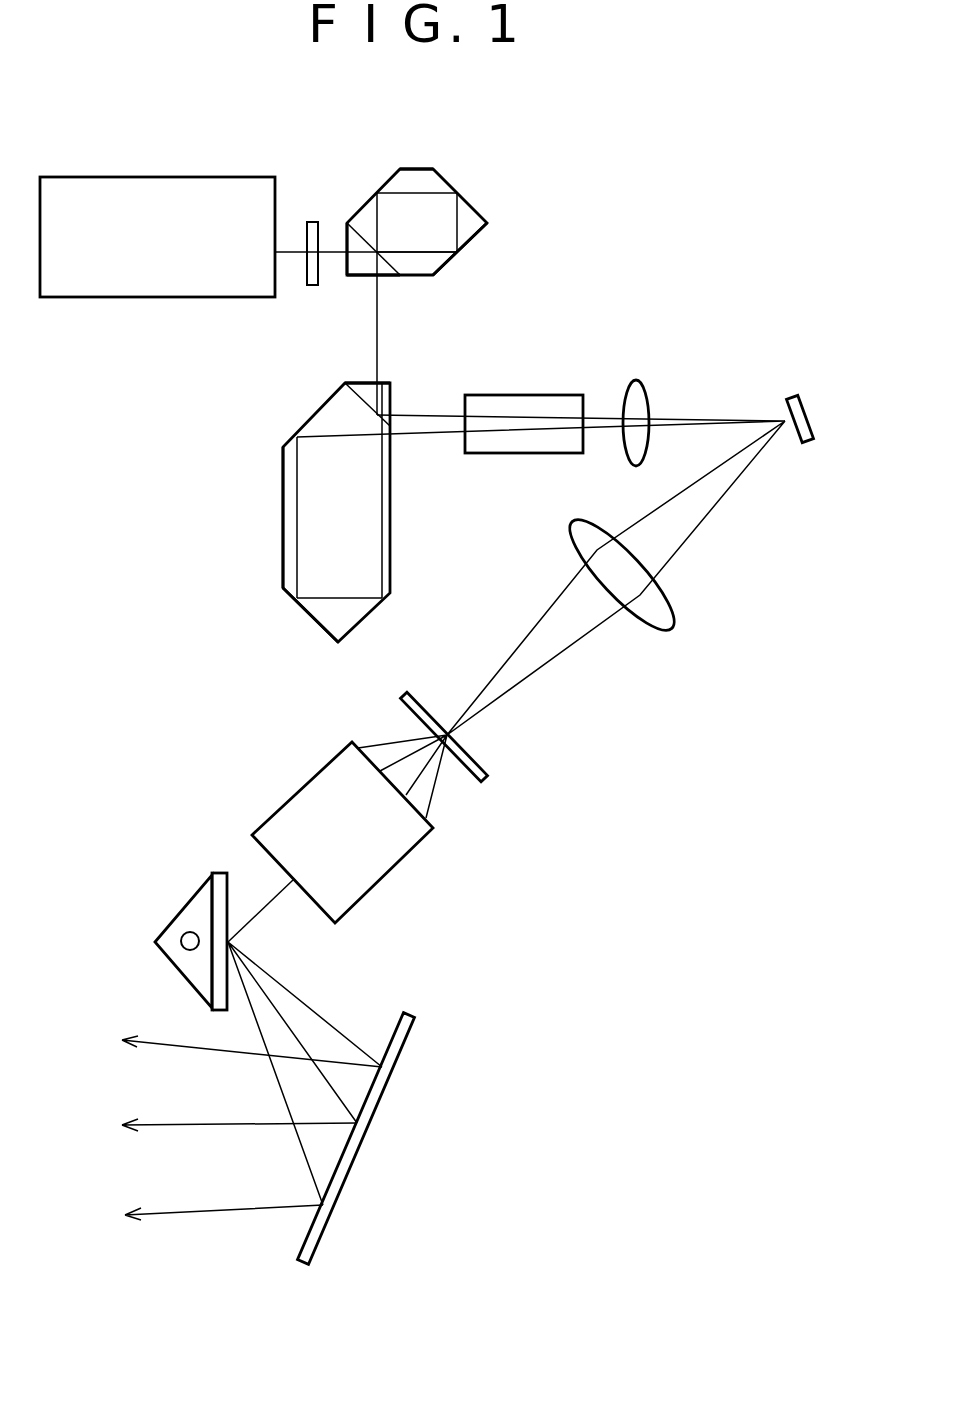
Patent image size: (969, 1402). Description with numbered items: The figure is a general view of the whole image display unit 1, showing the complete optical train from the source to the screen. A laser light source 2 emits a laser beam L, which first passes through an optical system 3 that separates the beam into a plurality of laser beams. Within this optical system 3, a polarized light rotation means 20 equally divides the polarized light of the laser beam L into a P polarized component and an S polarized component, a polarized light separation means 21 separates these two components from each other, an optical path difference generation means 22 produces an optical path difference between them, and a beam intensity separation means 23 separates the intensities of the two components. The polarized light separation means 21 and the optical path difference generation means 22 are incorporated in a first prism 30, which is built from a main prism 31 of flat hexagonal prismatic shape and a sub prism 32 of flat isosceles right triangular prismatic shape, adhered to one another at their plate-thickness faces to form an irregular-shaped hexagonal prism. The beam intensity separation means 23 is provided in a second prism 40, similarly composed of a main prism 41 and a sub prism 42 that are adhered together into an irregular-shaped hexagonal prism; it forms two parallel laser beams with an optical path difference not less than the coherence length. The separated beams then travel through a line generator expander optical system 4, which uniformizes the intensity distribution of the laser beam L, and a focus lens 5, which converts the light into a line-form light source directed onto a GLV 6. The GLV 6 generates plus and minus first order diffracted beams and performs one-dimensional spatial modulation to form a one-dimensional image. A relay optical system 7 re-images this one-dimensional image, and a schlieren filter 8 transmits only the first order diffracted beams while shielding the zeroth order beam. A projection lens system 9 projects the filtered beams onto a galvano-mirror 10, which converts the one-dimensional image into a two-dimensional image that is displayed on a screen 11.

The image display unit 1 is at (707, 200).
The laser light source 2 is at (152, 177).
The optical system 3 is at (507, 302).
The line generator expander optical system 4 is at (522, 402).
The focus lens 5 is at (637, 380).
The GLV 6 is at (787, 408).
The relay optical system 7 is at (675, 610).
The schlieren filter 8 is at (482, 772).
The projection lens system 9 is at (373, 853).
The galvano-mirror 10 is at (188, 912).
The screen 11 is at (395, 1038).
The polarized light rotation means 20 is at (310, 222).
The polarized light separation means 21 is at (347, 235).
The optical path difference generation means 22 is at (417, 169).
The beam intensity separation means 23 is at (283, 508).
The first prism 30 is at (468, 197).
The main prism 31 is at (467, 232).
The sub prism 32 is at (361, 265).
The second prism 40 is at (318, 410).
The main prism 41 is at (323, 613).
The sub prism 42 is at (385, 388).
The laser beam L is at (290, 254).